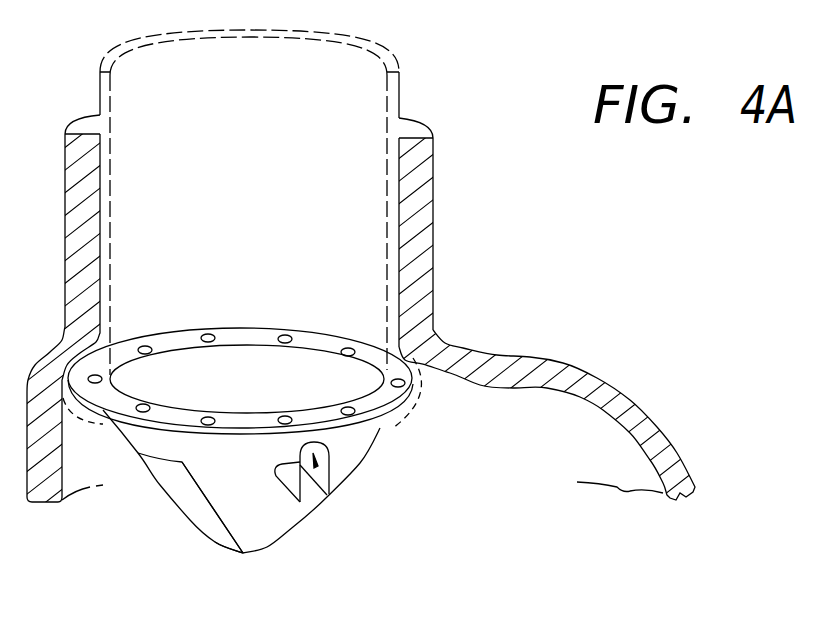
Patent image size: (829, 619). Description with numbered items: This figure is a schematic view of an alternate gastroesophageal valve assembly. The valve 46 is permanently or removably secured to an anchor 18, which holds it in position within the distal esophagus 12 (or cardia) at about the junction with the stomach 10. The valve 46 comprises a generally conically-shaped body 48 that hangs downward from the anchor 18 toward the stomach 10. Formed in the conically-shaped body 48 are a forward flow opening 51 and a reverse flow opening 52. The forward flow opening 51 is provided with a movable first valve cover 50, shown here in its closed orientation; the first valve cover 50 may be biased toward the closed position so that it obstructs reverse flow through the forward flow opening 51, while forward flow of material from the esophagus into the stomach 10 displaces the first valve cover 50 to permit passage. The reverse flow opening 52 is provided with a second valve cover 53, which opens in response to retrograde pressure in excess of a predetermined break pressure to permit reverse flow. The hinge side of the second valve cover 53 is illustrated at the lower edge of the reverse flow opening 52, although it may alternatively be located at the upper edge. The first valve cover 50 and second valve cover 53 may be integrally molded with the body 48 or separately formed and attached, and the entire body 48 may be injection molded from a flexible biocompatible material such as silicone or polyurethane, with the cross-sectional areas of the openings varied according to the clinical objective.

The stomach 10 is at (623, 403).
The distal esophagus 12 is at (420, 174).
The anchor 18 is at (400, 88).
The valve 46 is at (372, 438).
The conically-shaped body 48 is at (268, 533).
The first valve cover 50 is at (188, 508).
The forward flow opening 51 is at (227, 532).
The reverse flow opening 52 is at (330, 455).
The second valve cover 53 is at (323, 500).